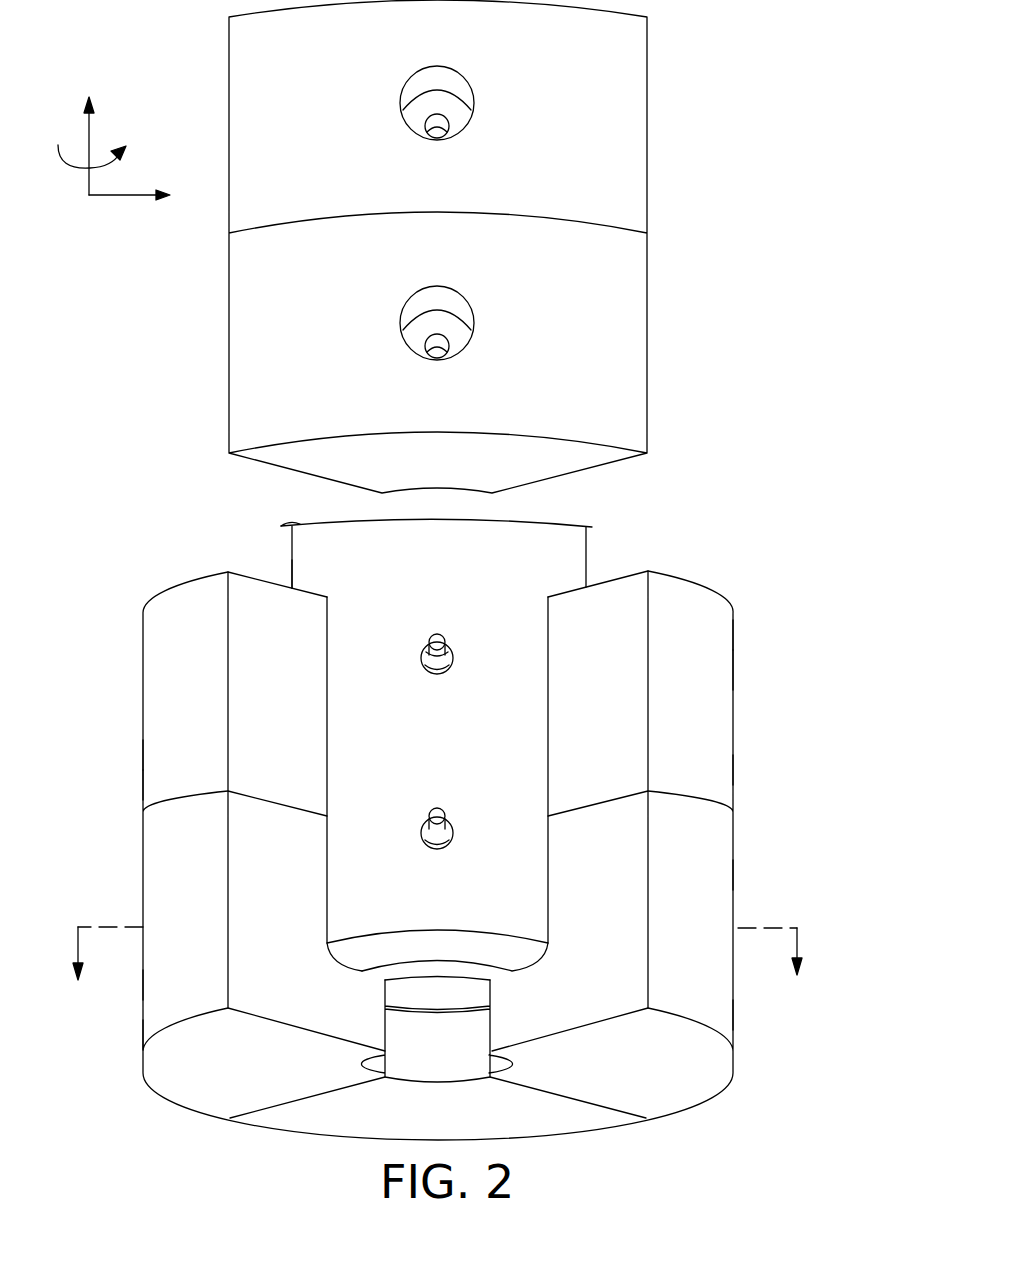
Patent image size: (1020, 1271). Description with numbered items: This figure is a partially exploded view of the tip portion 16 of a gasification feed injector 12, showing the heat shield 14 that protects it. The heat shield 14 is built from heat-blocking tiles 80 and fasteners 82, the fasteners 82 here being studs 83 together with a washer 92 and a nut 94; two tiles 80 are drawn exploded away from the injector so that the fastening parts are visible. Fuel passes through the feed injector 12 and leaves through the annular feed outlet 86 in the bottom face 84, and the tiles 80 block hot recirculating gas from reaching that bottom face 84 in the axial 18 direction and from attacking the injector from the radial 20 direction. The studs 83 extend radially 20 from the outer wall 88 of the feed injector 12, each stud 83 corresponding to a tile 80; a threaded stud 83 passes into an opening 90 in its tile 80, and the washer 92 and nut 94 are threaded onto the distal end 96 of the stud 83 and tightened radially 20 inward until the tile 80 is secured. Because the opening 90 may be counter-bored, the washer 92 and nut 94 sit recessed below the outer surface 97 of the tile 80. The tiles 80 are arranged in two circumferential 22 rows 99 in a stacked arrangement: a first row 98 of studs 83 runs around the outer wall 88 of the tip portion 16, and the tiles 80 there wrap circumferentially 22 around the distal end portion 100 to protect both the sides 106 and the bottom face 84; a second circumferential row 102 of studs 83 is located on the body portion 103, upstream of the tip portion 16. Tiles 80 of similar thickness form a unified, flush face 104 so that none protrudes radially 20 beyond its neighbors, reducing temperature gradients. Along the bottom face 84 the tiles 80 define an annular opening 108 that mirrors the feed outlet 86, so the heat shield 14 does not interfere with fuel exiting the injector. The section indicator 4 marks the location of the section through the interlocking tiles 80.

The section line 4- 4 is at (438, 961).
The feed injector 12 is at (575, 543).
The heat shield 14 is at (713, 615).
The tip portion 16 is at (530, 607).
The axial direction 18 is at (89, 128).
The radial direction 20 is at (130, 197).
The circumferential direction 22 is at (83, 165).
The tile 80 is at (628, 212).
The fastener 82 is at (440, 662).
The stud 83 is at (441, 637).
The bottom face 84 is at (502, 972).
The feed outlet 86 is at (403, 992).
The outer wall 88 is at (418, 605).
The opening 90 is at (450, 108).
The washer 92 is at (428, 672).
The nut 94 is at (425, 660).
The distal end 96 is at (432, 641).
The outer surface 97 is at (735, 770).
The first row 98 is at (140, 983).
The rows 99 is at (735, 634).
The distal end portion 100 is at (342, 953).
The second circumferential row 102 is at (155, 763).
The body portion 103 is at (287, 545).
The unified face 104 is at (707, 670).
The sides 106 is at (327, 570).
The annular opening 108 is at (459, 1057).